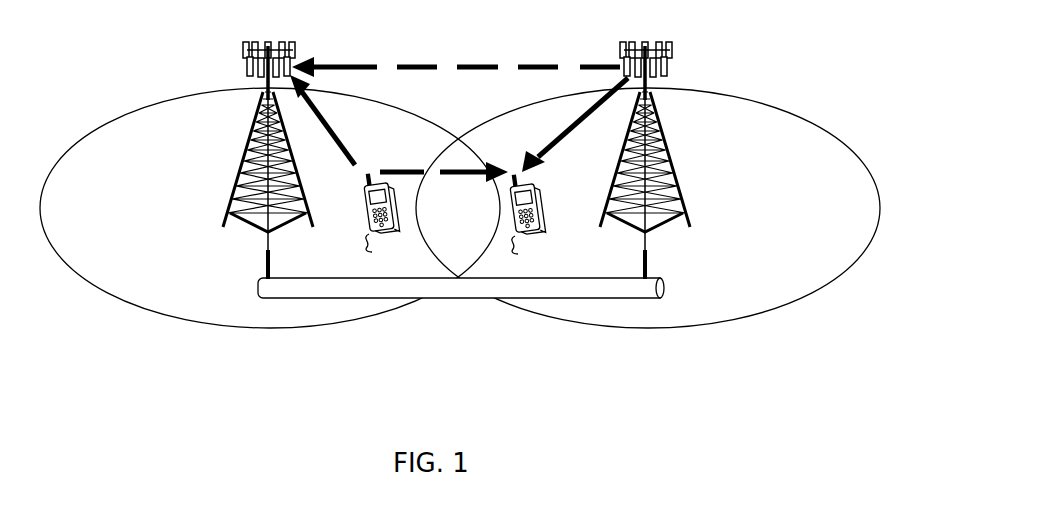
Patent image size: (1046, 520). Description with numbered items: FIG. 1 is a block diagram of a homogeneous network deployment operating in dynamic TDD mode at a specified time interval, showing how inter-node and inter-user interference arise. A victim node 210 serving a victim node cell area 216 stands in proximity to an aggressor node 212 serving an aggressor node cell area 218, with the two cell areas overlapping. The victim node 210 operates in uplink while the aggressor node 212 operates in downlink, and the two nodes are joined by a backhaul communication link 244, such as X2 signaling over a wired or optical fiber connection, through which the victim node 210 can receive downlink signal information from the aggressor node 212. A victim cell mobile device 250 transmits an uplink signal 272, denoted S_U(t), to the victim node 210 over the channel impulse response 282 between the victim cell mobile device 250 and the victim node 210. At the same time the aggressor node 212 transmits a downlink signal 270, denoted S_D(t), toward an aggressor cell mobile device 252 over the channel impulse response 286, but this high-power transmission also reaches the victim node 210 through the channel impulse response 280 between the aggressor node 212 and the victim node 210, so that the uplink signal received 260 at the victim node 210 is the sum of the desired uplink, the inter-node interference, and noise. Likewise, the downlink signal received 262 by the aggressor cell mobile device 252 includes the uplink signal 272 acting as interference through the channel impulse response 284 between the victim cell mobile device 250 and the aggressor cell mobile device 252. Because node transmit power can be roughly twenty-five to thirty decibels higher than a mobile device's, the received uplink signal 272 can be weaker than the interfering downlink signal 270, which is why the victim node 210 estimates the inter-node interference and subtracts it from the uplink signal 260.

The victim node 210 is at (222, 224).
The aggressor node 212 is at (690, 224).
The victim node cell area 216 is at (170, 318).
The aggressor node cell area 218 is at (740, 324).
The backhaul communication link 244 is at (456, 299).
The victim cell mobile device 250 is at (377, 222).
The aggressor cell mobile device 252 is at (522, 224).
The uplink signal received 260 is at (314, 35).
The downlink signal received 262 is at (565, 188).
The downlink signal 270 is at (587, 46).
The uplink signal 272 is at (381, 150).
The channel impulse response between the aggressor node and the victim node 280 is at (456, 51).
The channel impulse response between the victim cell mobile device and the victim no 282 is at (339, 120).
The channel impulse response between the victim cell mobile device and the aggressor 284 is at (444, 189).
The channel impulse response between the aggressor cell mobile device and the aggres 286 is at (564, 125).